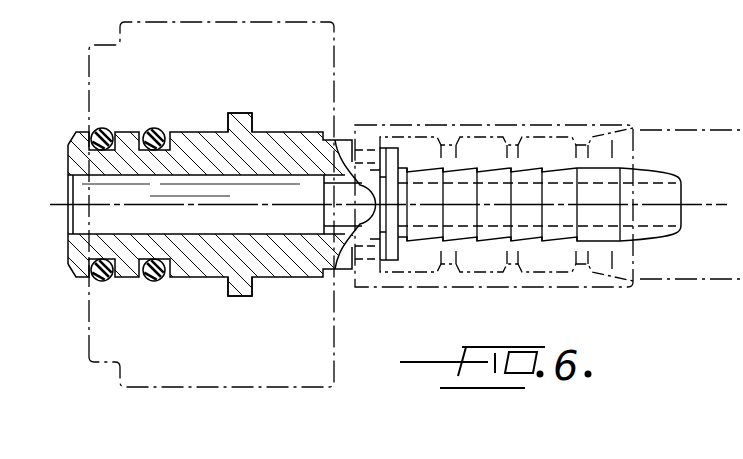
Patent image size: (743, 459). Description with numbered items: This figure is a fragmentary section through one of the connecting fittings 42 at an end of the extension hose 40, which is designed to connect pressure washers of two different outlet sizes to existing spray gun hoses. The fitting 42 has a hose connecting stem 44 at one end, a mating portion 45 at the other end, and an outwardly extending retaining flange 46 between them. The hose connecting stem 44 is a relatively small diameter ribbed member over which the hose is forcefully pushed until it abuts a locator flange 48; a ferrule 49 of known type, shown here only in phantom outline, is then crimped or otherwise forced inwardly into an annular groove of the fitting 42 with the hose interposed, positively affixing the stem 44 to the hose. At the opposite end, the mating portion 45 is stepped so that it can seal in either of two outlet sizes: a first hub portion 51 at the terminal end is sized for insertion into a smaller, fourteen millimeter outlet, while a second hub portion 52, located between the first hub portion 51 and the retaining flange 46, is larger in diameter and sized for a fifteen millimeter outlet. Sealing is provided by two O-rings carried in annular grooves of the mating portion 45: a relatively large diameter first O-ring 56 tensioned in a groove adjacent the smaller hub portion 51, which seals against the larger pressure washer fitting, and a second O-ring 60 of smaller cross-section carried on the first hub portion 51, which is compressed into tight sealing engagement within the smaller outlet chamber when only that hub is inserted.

The extension hose 40 is at (723, 122).
The connecting fitting 42 is at (297, 133).
The hose connecting stem 44 is at (463, 178).
The mating portion 45 is at (188, 148).
The retaining flange 46 is at (238, 115).
The locator flange 48 is at (395, 260).
The ferrule 49 is at (565, 125).
The first hub portion 51 is at (128, 282).
The second hub portion 52 is at (193, 282).
The first O-ring 56 is at (165, 128).
The second O-ring 60 is at (102, 130).